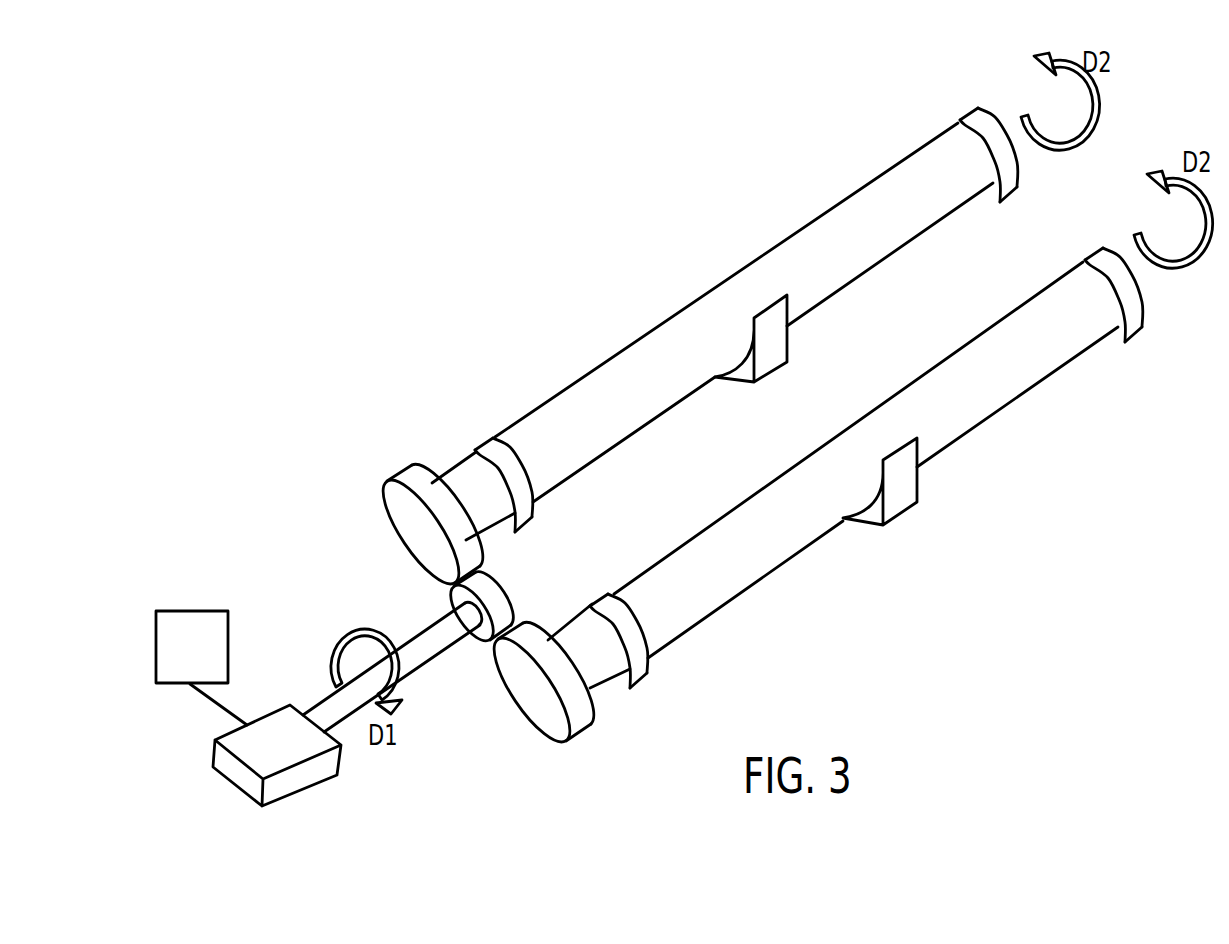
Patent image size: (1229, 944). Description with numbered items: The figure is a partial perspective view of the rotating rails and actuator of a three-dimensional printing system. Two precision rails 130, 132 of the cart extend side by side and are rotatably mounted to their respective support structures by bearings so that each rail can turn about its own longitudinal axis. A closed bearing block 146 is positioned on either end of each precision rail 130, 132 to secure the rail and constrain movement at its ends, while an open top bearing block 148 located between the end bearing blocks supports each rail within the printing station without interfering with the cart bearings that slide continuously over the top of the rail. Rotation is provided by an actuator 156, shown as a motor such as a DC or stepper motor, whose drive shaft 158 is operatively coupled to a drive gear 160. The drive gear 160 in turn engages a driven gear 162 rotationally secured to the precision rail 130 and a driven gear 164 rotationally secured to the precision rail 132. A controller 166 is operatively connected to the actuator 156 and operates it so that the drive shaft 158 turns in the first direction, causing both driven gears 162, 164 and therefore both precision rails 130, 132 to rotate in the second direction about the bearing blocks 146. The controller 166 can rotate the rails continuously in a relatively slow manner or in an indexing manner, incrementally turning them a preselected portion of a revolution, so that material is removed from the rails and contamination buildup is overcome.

The precision rail 130 is at (665, 408).
The precision rail 132 is at (763, 573).
The bearing block 146 is at (530, 526).
The open top bearing block 148 is at (790, 342).
The actuator 156 is at (288, 755).
The drive shaft 158 is at (432, 660).
The drive gear 160 is at (450, 600).
The driven gear 162 is at (405, 535).
The driven gear 164 is at (533, 715).
The controller 166 is at (220, 652).